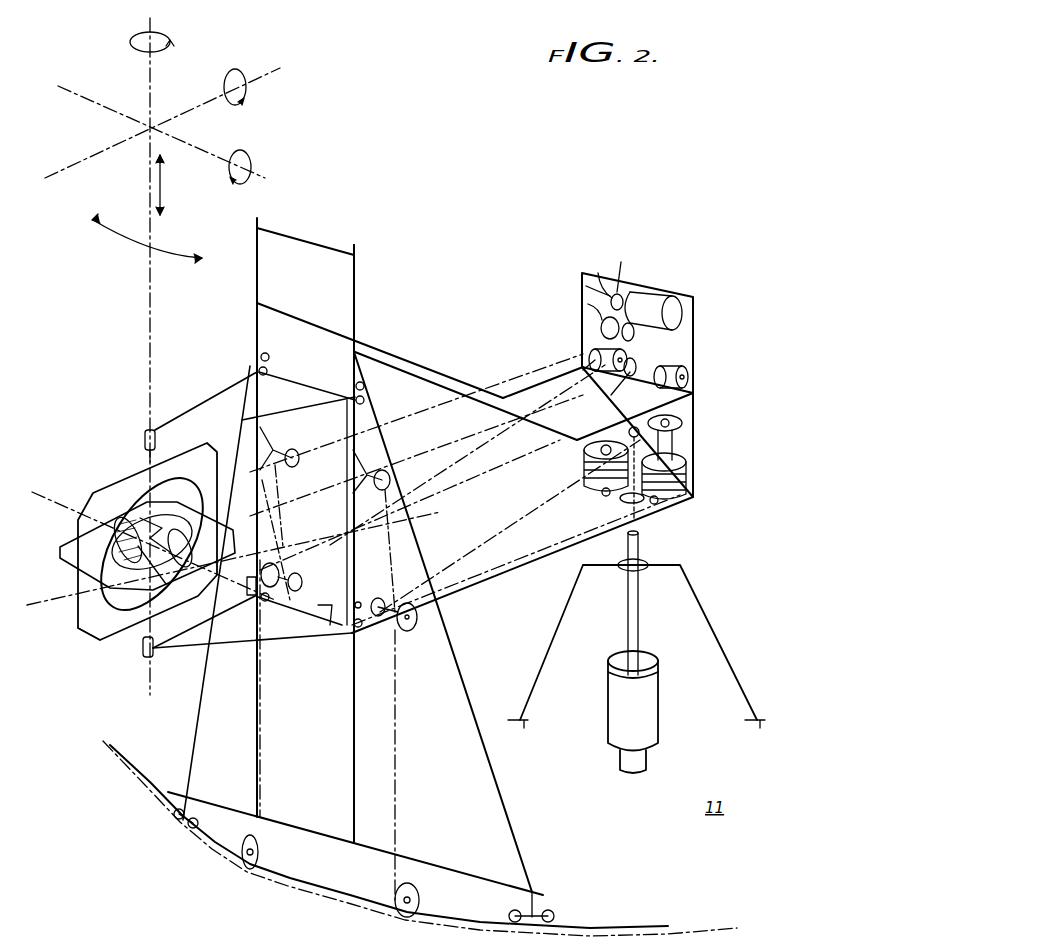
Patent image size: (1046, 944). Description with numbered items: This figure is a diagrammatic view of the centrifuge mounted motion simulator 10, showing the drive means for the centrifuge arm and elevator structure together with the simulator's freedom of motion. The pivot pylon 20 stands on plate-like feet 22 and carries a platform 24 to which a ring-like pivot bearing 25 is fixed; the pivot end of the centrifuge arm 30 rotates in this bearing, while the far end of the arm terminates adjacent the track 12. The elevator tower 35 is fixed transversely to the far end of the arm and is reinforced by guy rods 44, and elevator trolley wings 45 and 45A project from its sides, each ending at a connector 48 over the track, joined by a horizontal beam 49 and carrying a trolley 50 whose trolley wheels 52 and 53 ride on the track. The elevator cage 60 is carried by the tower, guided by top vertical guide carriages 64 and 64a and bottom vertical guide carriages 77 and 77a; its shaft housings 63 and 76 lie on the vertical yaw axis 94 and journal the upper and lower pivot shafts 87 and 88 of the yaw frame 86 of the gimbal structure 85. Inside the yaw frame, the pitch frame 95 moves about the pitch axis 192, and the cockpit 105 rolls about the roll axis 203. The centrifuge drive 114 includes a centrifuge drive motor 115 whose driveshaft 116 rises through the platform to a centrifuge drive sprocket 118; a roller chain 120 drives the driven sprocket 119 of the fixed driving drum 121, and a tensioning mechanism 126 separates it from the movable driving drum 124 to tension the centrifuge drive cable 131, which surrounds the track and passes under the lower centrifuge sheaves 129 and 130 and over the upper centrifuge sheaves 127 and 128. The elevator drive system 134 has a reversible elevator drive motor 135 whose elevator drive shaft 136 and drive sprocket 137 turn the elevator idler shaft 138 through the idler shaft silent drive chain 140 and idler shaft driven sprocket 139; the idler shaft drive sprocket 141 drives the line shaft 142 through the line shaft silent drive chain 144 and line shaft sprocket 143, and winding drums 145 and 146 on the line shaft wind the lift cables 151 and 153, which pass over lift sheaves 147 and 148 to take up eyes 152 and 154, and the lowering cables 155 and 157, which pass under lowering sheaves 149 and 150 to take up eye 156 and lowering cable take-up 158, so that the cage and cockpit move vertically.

The centrifuge mounted motion simulator 10 is at (333, 232).
The track 12 is at (648, 919).
The pivot pylon 20 is at (720, 624).
The feet 22 is at (644, 732).
The platform 24 is at (594, 572).
The pivot bearing 25 is at (650, 562).
The centrifuge arm 30 is at (534, 566).
The elevator tower 35 is at (356, 280).
The guy rods 44 is at (425, 378).
The elevator trolley wing 45 is at (522, 838).
The elevator trolley wing 45A is at (196, 740).
The connector 48 is at (534, 890).
The horizontal beam 49 is at (430, 868).
The trolley 50 is at (547, 904).
The trolley wheel 52 is at (512, 914).
The trolley wheel 53 is at (556, 914).
The elevator cage 60 is at (187, 406).
The shaft housing 63 is at (141, 444).
The top vertical guide carriage 64 is at (270, 360).
The top vertical guide carriage 64a is at (364, 388).
The shaft housing 76 is at (142, 657).
The bottom vertical guide carriage 77 is at (274, 602).
The bottom vertical guide carriage 77a is at (358, 630).
The gimbal structure 85 is at (114, 476).
The yaw frame 86 is at (78, 618).
The upper pivot shaft 87 is at (156, 452).
The lower pivot shaft 88 is at (150, 625).
The yaw axis 94 is at (150, 296).
The pitch frame 95 is at (60, 552).
The cockpit 105 is at (140, 566).
The centrifuge drive 114 is at (616, 647).
The centrifuge drive motor 115 is at (654, 712).
The centrifuge driveshaft 116 is at (639, 628).
The centrifuge drive sprocket 118 is at (632, 426).
The centrifuge driven sprocket 119 is at (684, 423).
The centrifuge drive multiple roller chain 120 is at (648, 436).
The fixed driving drum 121 is at (688, 462).
The movable driving drum 124 is at (588, 434).
The tensioning mechanism 126 is at (620, 502).
The upper centrifuge sheave 127 is at (270, 563).
The upper centrifuge sheave 128 is at (405, 618).
The lower centrifuge sheave 129 is at (240, 839).
The lower centrifuge sheave 130 is at (418, 896).
The centrifuge drive cable 131 is at (735, 928).
The elevator drive system 134 is at (678, 274).
The elevator drive motor 135 is at (645, 290).
The elevator drive shaft 136 is at (619, 294).
The drive sprocket 137 is at (601, 275).
The elevator idler shaft 138 is at (588, 304).
The idler shaft driven sprocket 139 is at (601, 330).
The idler shaft silent drive chain 140 is at (586, 286).
The idler shaft drive sprocket 141 is at (636, 334).
The line shaft 142 is at (636, 366).
The line shaft sprocket 143 is at (628, 372).
The line shaft silent drive chain 144 is at (592, 352).
The winding drum 145 is at (590, 372).
The winding drum 146 is at (688, 374).
The lift sheave 147 is at (291, 466).
The lift sheave 148 is at (385, 490).
The elevator lowering sheave 149 is at (298, 576).
The lowering sheave 150 is at (379, 598).
The lift cable 151 is at (524, 370).
The take up eye 152 is at (248, 570).
The lift cable 153 is at (492, 432).
The take up eye 154 is at (318, 600).
The lowering cable 155 is at (503, 454).
The take up eye 156 is at (256, 390).
The lowering cable 157 is at (516, 510).
The lowering cable take-up 158 is at (322, 408).
The pitch axis 192 is at (265, 68).
The roll axis 203 is at (112, 112).